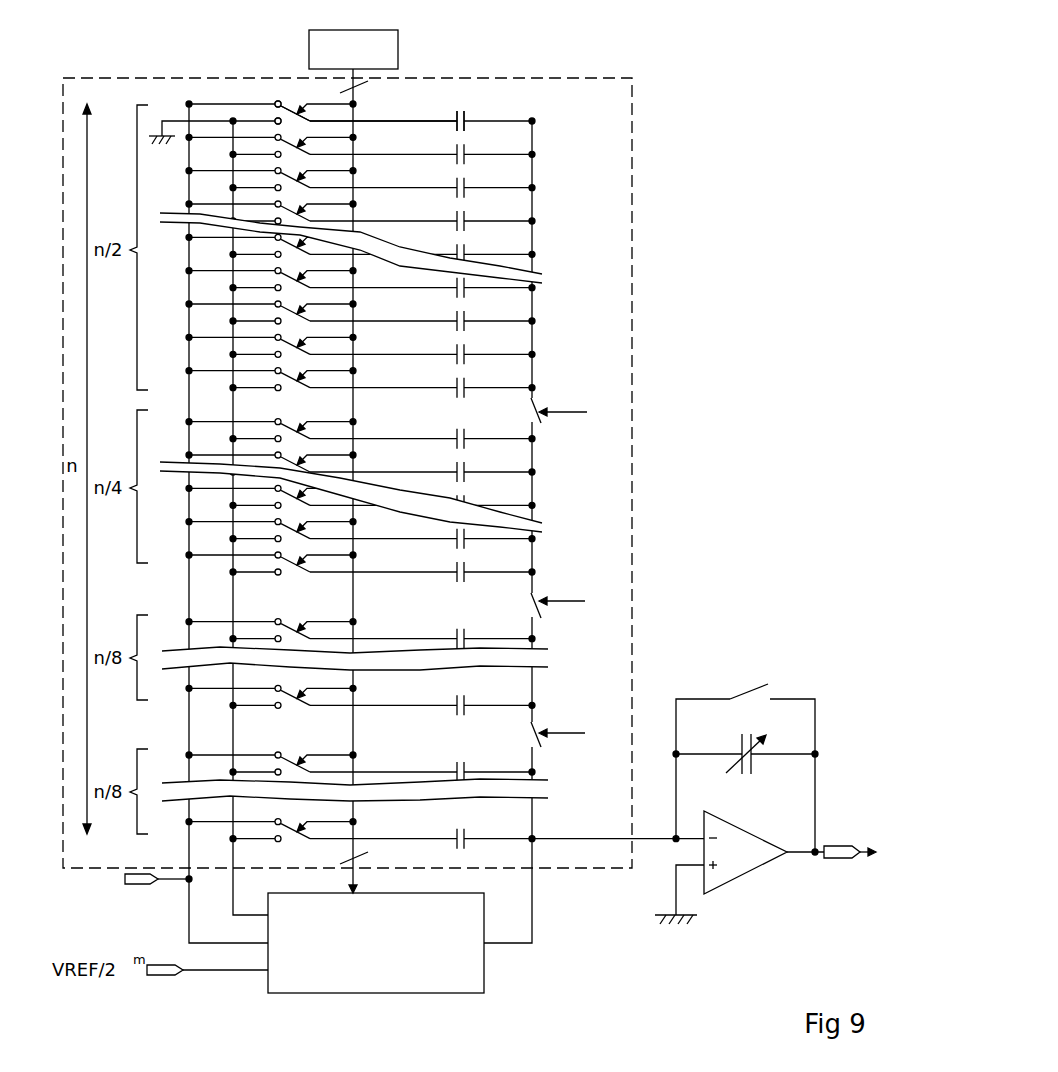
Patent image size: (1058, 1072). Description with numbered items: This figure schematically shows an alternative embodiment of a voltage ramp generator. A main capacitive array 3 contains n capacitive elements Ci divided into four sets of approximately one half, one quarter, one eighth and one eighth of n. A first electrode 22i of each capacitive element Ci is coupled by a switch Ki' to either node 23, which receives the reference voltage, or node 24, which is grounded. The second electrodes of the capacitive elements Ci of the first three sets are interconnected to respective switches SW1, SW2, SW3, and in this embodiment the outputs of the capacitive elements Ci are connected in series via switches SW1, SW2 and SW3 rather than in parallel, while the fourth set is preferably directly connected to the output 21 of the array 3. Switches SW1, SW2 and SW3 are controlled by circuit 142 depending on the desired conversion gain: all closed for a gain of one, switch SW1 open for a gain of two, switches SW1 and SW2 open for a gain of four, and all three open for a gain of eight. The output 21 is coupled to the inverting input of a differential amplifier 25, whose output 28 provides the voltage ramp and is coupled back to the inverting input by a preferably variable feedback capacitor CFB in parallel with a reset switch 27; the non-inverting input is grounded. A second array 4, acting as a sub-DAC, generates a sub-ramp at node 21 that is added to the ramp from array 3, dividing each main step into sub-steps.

The capacitive array 3 is at (633, 203).
The second array 4 is at (484, 972).
The output 21 is at (650, 835).
The first electrode 22i is at (405, 121).
The node 23 is at (183, 884).
The node 24 is at (175, 120).
The differential amplifier 25 is at (745, 877).
The reset switch 27 is at (762, 684).
The output 28 is at (820, 848).
The circuit 142 is at (398, 50).
The capacitive element Ci is at (467, 110).
The switch Ki' is at (282, 77).
The switch SW1 is at (534, 405).
The switch SW2 is at (534, 600).
The switch SW3 is at (534, 728).
The feedback capacitor CFB is at (745, 771).